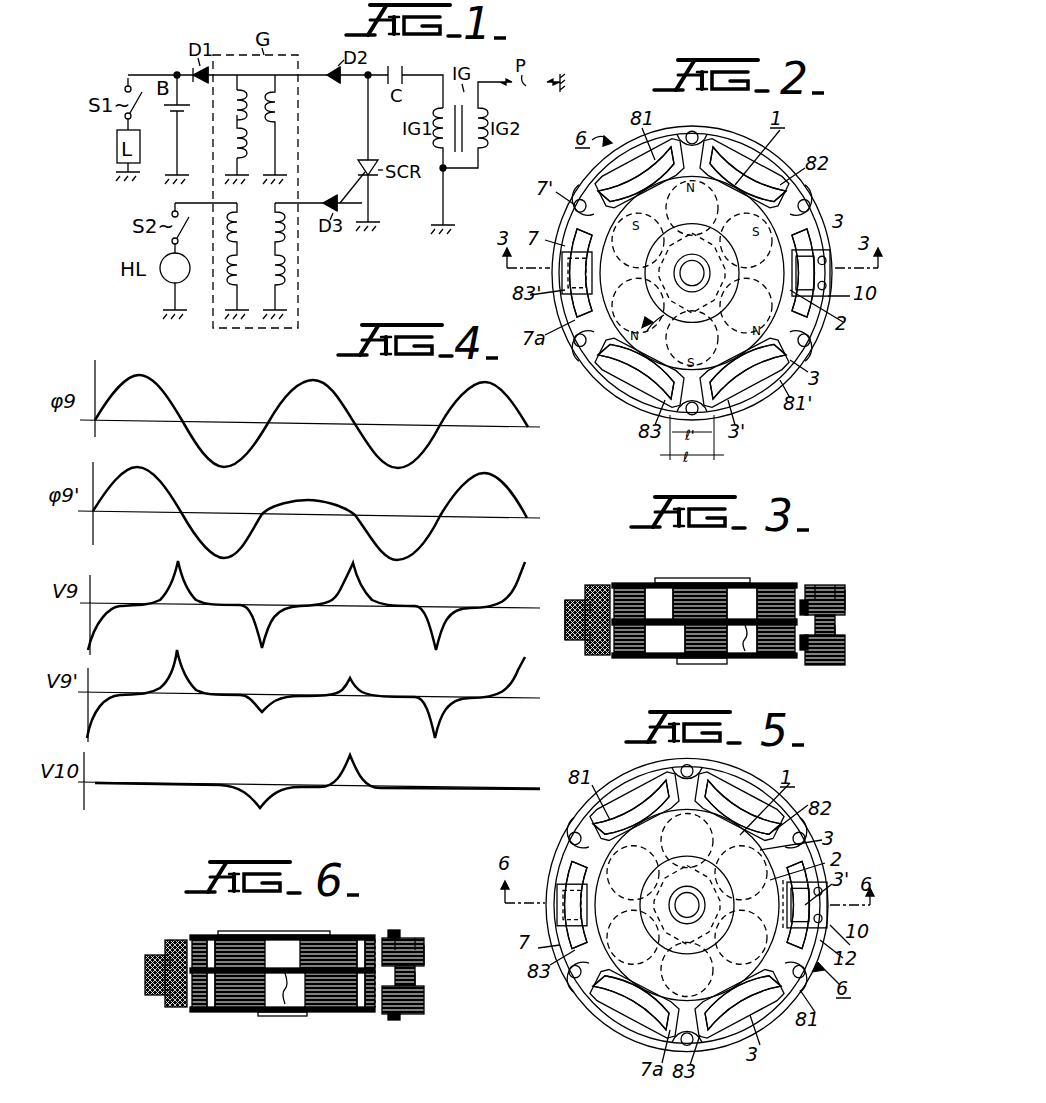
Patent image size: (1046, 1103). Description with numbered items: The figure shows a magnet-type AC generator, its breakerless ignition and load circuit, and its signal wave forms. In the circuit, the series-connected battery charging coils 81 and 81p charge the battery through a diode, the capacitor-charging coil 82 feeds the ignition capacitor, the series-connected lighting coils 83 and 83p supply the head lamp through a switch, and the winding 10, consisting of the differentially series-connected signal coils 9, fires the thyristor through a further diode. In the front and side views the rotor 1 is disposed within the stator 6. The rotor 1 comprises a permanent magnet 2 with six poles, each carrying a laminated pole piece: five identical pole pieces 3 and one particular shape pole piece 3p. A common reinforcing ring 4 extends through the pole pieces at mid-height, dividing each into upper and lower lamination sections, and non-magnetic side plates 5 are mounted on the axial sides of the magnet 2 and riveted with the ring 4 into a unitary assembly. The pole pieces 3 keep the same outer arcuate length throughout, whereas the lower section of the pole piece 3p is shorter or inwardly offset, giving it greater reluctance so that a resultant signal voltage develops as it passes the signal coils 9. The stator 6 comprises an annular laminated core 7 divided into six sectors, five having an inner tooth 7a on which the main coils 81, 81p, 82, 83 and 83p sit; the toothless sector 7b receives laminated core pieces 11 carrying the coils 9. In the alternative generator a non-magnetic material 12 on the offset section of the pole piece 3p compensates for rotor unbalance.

In FIG. 2, the rotor 1 is at (692, 272).
In FIG. 3, the rotor 1 is at (768, 655).
In FIG. 5, the rotor 1 is at (687, 905).
In FIG. 6, the rotor 1 is at (282, 973).
In FIG. 2, the permanent magnet 2 is at (692, 272).
In FIG. 3, the permanent magnet 2 is at (745, 588).
In FIG. 5, the permanent magnet 2 is at (687, 904).
In FIG. 2, the pole piece 3 is at (692, 273).
In FIG. 3, the pole piece 3 is at (787, 572).
In FIG. 5, the pole piece 3 is at (687, 905).
In FIG. 6, the pole piece 3 is at (330, 1040).
In FIG. 3, the particular shape pole piece 3p is at (715, 588).
In FIG. 6, the particular shape pole piece 3p is at (368, 940).
In FIG. 2, the reinforcing ring 4 is at (692, 273).
In FIG. 3, the reinforcing ring 4 is at (745, 653).
In FIG. 5, the reinforcing ring 4 is at (687, 905).
In FIG. 6, the reinforcing ring 4 is at (286, 1007).
In FIG. 3, the non-magnetic side plate 5 is at (652, 588).
In FIG. 6, the non-magnetic side plate 5 is at (210, 940).
In FIG. 2, the stator 6 is at (692, 273).
In FIG. 3, the stator 6 is at (580, 586).
In FIG. 5, the stator 6 is at (687, 904).
In FIG. 2, the annular laminated core 7 is at (577, 273).
In FIG. 3, the annular laminated core 7 is at (580, 655).
In FIG. 5, the annular laminated core 7 is at (572, 905).
In FIG. 6, the annular laminated core 7 is at (145, 975).
In FIG. 2, the inner tooth 7a is at (692, 273).
In FIG. 5, the inner tooth 7a is at (687, 905).
In FIG. 3, the holder 7 (right) 7b is at (840, 625).
In FIG. 6, the holder 7 (right) 7b is at (418, 978).
In FIG. 1, the signal coil 9 is at (280, 232).
In FIG. 3, the signal coil 9 is at (840, 592).
In FIG. 6, the signal coil 9 is at (420, 940).
In FIG. 2, the signal winding 10 is at (811, 273).
In FIG. 3, the signal winding 10 is at (860, 558).
In FIG. 5, the signal winding 10 is at (807, 905).
In FIG. 6, the signal winding 10 is at (440, 900).
In FIG. 3, the laminated core piece 11 is at (845, 600).
In FIG. 6, the laminated core piece 11 is at (424, 950).
In FIG. 6, the non-magnetic material 12 is at (375, 1007).
In FIG. 1, the battery charging coil 81 is at (246, 129).
In FIG. 2, the battery charging coil 81 is at (639, 173).
In FIG. 5, the battery charging coil 81 is at (687, 905).
In FIG. 2, the battery charging coil 81p is at (744, 372).
In FIG. 1, the capacitor-charging coil 82 is at (276, 110).
In FIG. 2, the capacitor-charging coil 82 is at (744, 173).
In FIG. 5, the capacitor-charging coil 82 is at (739, 806).
In FIG. 1, the lighting coil 83 is at (247, 261).
In FIG. 2, the lighting coil 83 is at (639, 372).
In FIG. 5, the lighting coil 83 is at (634, 1003).
In FIG. 3, the lighting coil 83p is at (600, 585).
In FIG. 6, the lighting coil 83p is at (170, 1008).